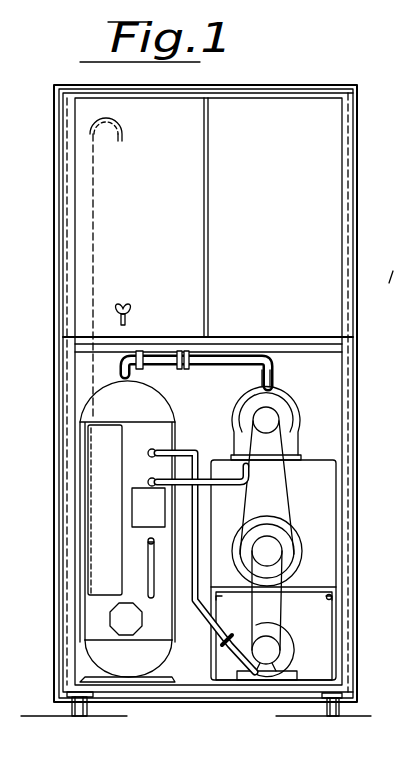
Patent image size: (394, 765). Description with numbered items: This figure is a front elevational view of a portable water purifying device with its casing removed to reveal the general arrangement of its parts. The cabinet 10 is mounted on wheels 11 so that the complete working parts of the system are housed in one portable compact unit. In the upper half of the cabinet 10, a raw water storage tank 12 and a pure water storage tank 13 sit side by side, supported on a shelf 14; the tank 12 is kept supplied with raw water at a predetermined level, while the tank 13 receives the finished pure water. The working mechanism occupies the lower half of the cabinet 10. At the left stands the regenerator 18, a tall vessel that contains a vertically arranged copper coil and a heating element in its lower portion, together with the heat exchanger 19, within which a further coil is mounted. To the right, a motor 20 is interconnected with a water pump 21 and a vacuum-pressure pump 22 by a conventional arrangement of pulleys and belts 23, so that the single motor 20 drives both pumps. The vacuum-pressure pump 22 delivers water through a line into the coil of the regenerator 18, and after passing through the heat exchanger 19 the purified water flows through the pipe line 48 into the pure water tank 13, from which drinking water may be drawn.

The cabinet 10 is at (53, 450).
The wheels 11 is at (75, 716).
The raw water storage tank 12 is at (332, 120).
The pure water storage tank 13 is at (73, 171).
The shelf 14 is at (93, 348).
The regenerator 18 is at (82, 650).
The heat exchanger 19 is at (88, 547).
The motor 20 is at (297, 552).
The water pump 21 is at (294, 652).
The vacuum-pressure pump 22 is at (300, 427).
The pulleys and belts 23 is at (391, 682).
The pipe line 48 is at (386, 202).